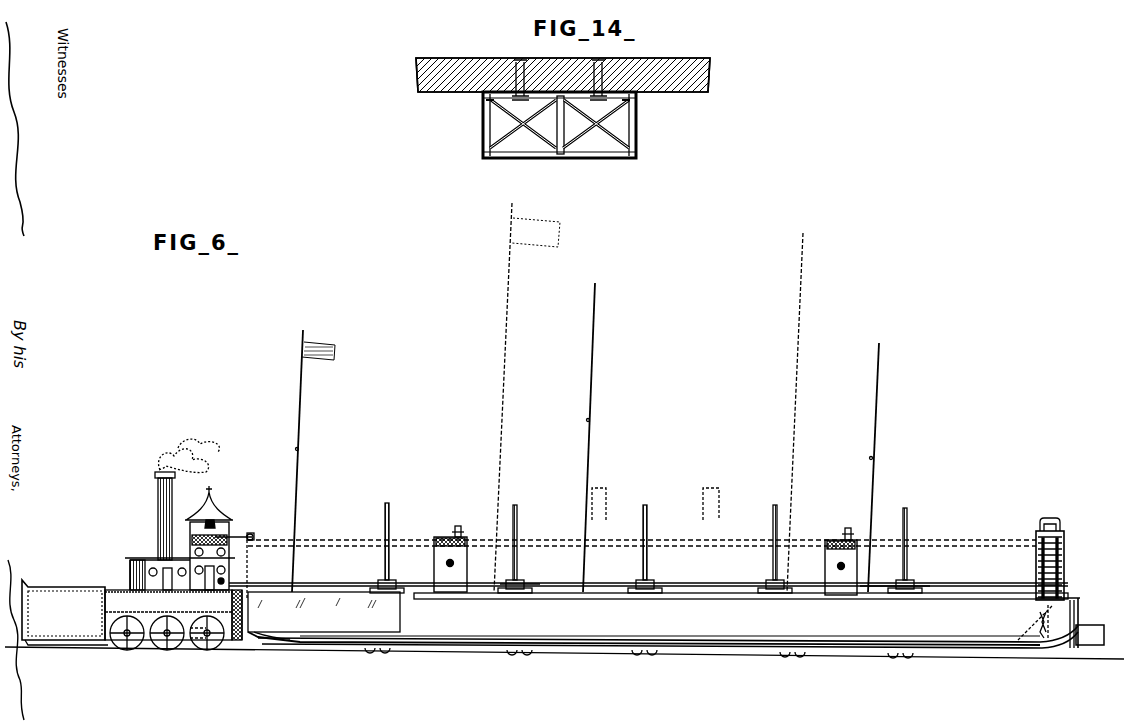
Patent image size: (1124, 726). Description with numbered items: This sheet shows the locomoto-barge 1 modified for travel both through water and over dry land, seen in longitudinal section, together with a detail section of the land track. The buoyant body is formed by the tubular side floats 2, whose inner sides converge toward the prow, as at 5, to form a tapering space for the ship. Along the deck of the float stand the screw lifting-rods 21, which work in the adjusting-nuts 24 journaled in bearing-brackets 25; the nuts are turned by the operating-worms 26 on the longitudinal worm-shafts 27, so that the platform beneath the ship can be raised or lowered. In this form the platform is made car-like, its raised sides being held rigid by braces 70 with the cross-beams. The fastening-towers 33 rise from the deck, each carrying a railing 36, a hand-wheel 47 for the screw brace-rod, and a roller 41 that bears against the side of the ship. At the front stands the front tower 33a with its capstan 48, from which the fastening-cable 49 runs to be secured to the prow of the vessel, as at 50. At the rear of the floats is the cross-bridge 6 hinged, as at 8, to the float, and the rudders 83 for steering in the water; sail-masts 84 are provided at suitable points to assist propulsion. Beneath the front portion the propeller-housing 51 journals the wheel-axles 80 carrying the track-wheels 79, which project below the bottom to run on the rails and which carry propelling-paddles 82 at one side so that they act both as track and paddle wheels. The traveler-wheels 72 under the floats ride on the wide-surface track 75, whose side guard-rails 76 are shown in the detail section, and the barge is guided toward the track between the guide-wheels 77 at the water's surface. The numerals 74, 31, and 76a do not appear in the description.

In FIG. 14, the side guard-rails 76 is at (468, 60).
In FIG. 14, the guide-wheels 77 is at (544, 125).
In FIG. 6, the guide-wheels 77 is at (514, 650).
In FIG. 14, the track-wheels 79 is at (533, 130).
In FIG. 6, the track-wheels 79 is at (124, 644).
In FIG. 6, the tender 74 is at (72, 640).
In FIG. 6, the propeller-housing 51 is at (158, 606).
In FIG. 6, the wheel-axles 80 is at (163, 645).
In FIG. 6, the propelling-paddles 82 is at (200, 640).
In FIG. 6, the capstan 48 is at (213, 522).
In FIG. 6, the fastening-cable 49 is at (236, 537).
In FIG. 6, the cable securing point 50 is at (252, 536).
In FIG. 6, the front tower 33a is at (192, 546).
In FIG. 6, the pin 31 is at (224, 580).
In FIG. 6, the longitudinal worm-shafts 27 is at (258, 584).
In FIG. 6, the forwardly-convergent inner sides 5 is at (324, 615).
In FIG. 6, the wide-surface track 75 is at (290, 646).
In FIG. 6, the tubular side floats 2 is at (668, 623).
In FIG. 6, the keel plate 76a is at (590, 638).
In FIG. 6, the barge 1 is at (741, 578).
In FIG. 6, the traveler-wheels 72 is at (372, 650).
In FIG. 6, the operating-worms 26 is at (521, 583).
In FIG. 6, the screw lifting-rods 21 is at (646, 565).
In FIG. 6, the adjusting-nuts 24 is at (742, 586).
In FIG. 6, the bearing-brackets 25 is at (770, 592).
In FIG. 6, the fastening-towers 33 is at (433, 558).
In FIG. 6, the hand-wheel 47 is at (450, 533).
In FIG. 6, the roller 41 is at (449, 567).
In FIG. 6, the railing 36 is at (840, 540).
In FIG. 6, the cross-bridge 6 is at (1065, 542).
In FIG. 6, the braces 70 is at (1050, 516).
In FIG. 6, the hinge 8 is at (1036, 600).
In FIG. 6, the rudders 83 is at (1087, 626).
In FIG. 6, the sail-masts 84 is at (296, 477).